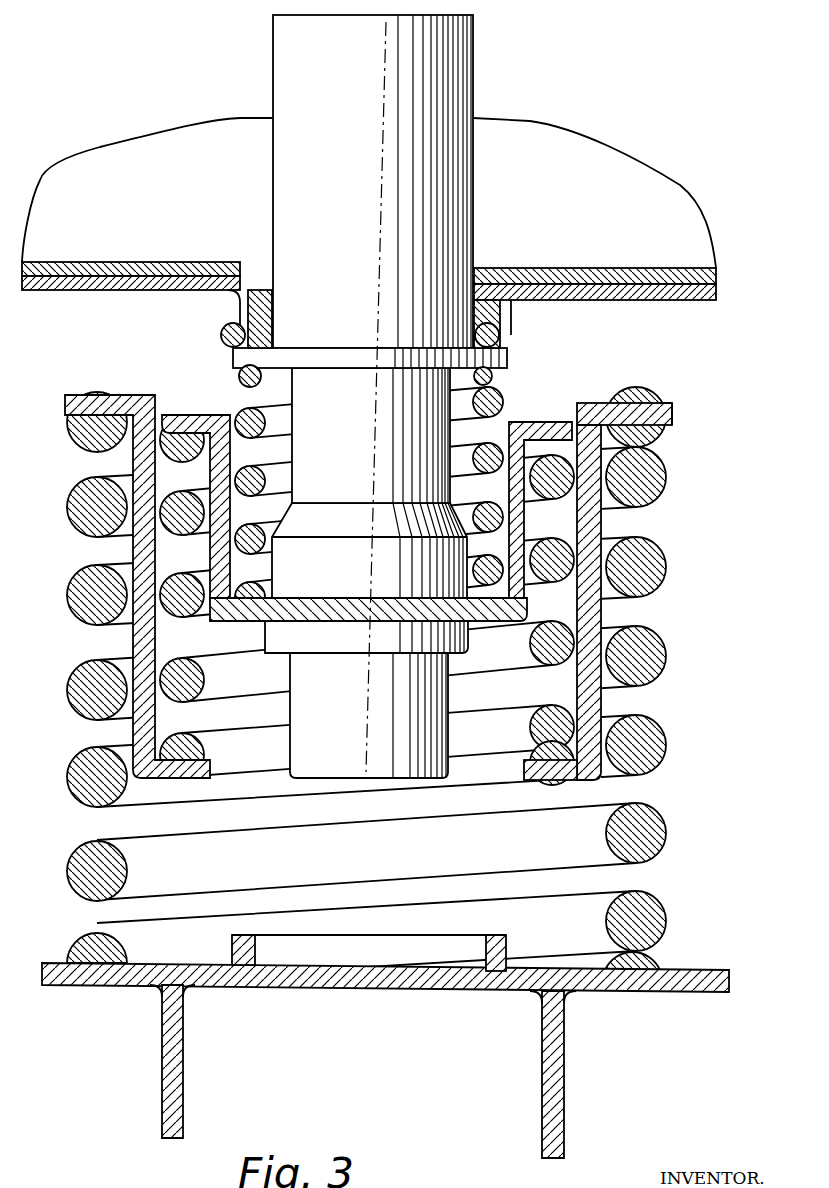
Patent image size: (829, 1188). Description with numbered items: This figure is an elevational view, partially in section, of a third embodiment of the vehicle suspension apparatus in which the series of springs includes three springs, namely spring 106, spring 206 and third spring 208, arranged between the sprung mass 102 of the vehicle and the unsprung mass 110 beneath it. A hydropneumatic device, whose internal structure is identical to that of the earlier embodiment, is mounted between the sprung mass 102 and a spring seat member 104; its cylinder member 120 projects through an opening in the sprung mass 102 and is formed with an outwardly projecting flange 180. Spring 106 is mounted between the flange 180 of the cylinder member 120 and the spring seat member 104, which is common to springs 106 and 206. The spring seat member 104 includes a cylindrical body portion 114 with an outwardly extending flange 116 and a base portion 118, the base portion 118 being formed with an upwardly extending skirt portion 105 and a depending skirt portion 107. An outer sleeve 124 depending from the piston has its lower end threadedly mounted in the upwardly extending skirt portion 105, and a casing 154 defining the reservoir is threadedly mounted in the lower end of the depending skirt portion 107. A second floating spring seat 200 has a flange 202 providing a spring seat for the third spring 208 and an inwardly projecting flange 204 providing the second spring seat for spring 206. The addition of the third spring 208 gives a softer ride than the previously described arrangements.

The sprung mass 102 is at (124, 270).
The spring seat member 104 is at (421, 595).
The upwardly extending skirt portion 105 is at (323, 588).
The spring 106 is at (493, 396).
The depending skirt portion 107 is at (283, 640).
The unsprung mass 110 is at (701, 968).
The cylindrical body portion 114 is at (221, 457).
The outwardly extending flange 116 is at (578, 402).
The base portion 118 is at (427, 612).
The cylinder member 120 is at (450, 172).
The outer sleeve 124 is at (306, 399).
The casing 154 is at (337, 768).
The outwardly projecting flange 180 is at (498, 350).
The second floating spring seat 200 is at (588, 488).
The flange 202 is at (663, 412).
The inwardly projecting flange 204 is at (537, 781).
The spring 206 is at (553, 548).
The third spring 208 is at (648, 655).